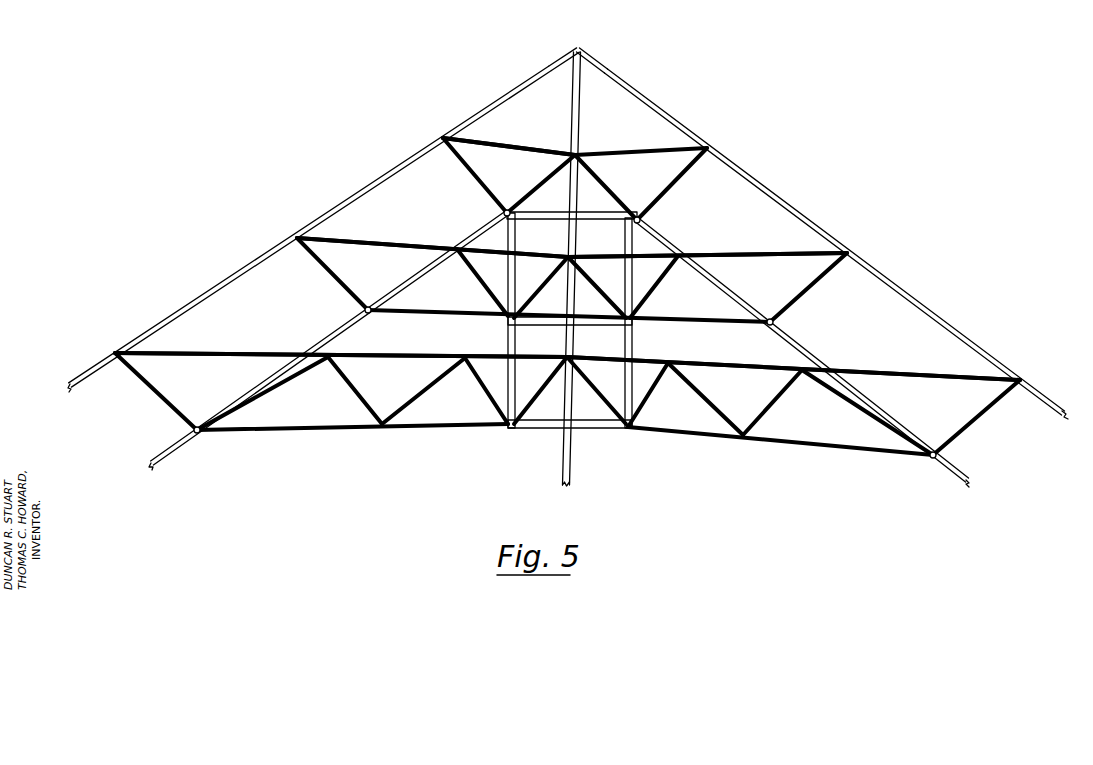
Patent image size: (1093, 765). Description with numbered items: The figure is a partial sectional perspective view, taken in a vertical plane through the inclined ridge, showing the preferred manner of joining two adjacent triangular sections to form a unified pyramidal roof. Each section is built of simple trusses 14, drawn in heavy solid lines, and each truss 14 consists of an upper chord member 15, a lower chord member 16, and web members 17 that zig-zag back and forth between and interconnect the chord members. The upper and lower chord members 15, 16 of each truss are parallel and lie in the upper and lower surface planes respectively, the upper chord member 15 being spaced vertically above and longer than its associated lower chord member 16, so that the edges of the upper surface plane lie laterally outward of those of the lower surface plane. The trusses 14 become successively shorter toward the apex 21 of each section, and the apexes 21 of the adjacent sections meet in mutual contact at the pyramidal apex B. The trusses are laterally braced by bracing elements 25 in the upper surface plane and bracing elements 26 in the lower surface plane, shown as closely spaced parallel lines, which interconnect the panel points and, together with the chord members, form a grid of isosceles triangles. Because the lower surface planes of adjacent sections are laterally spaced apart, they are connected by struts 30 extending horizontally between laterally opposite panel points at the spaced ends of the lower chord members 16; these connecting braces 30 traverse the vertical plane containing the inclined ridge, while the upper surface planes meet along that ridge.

The truss 14 is at (602, 152).
The upper chord member 15 is at (528, 137).
The lower chord member 16 is at (464, 316).
The web member 17 is at (472, 183).
The apex 21 is at (551, 70).
The bracing element 25 is at (497, 104).
The bracing element 26 is at (474, 223).
The strut 30 is at (504, 214).
The pyramidal apex B is at (578, 48).